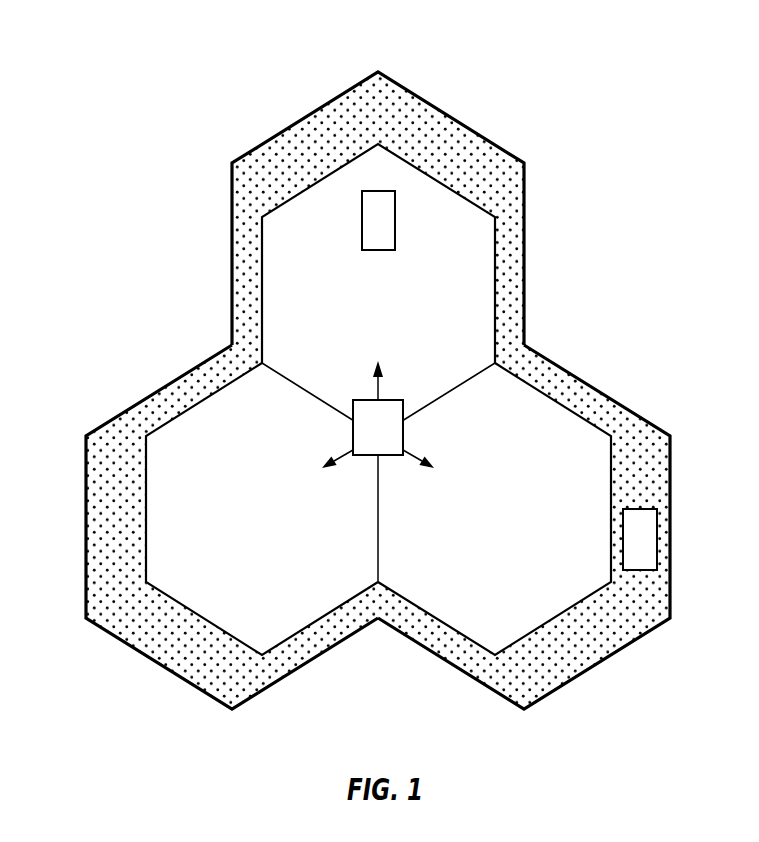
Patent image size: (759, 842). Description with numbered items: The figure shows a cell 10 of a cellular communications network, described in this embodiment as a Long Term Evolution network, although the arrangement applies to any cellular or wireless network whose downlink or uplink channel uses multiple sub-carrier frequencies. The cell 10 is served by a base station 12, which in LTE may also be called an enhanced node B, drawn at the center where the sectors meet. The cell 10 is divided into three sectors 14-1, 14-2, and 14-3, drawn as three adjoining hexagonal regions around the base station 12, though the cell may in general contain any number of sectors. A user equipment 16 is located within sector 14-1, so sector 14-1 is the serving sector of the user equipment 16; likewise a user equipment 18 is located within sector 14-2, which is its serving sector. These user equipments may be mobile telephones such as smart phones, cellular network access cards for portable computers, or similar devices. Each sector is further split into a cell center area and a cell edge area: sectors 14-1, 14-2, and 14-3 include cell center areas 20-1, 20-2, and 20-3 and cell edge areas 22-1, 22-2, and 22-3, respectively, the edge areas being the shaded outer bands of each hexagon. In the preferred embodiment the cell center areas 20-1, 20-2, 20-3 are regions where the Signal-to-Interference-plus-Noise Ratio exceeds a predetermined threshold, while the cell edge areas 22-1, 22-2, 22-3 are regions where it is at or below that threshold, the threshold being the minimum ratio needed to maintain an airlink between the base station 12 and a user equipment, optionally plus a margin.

The cell 10 is at (620, 86).
The base station 12 is at (368, 449).
The sector 14-1 is at (452, 117).
The sector 14-2 is at (613, 403).
The sector 14-3 is at (140, 403).
The user equipment 16 is at (368, 247).
The user equipment 18 is at (630, 565).
The cell center area 20-1 is at (396, 296).
The cell center area 20-2 is at (513, 525).
The cell center area 20-3 is at (278, 525).
The cell edge area 22-1 is at (393, 131).
The cell edge area 22-2 is at (658, 488).
The cell edge area 22-3 is at (137, 487).